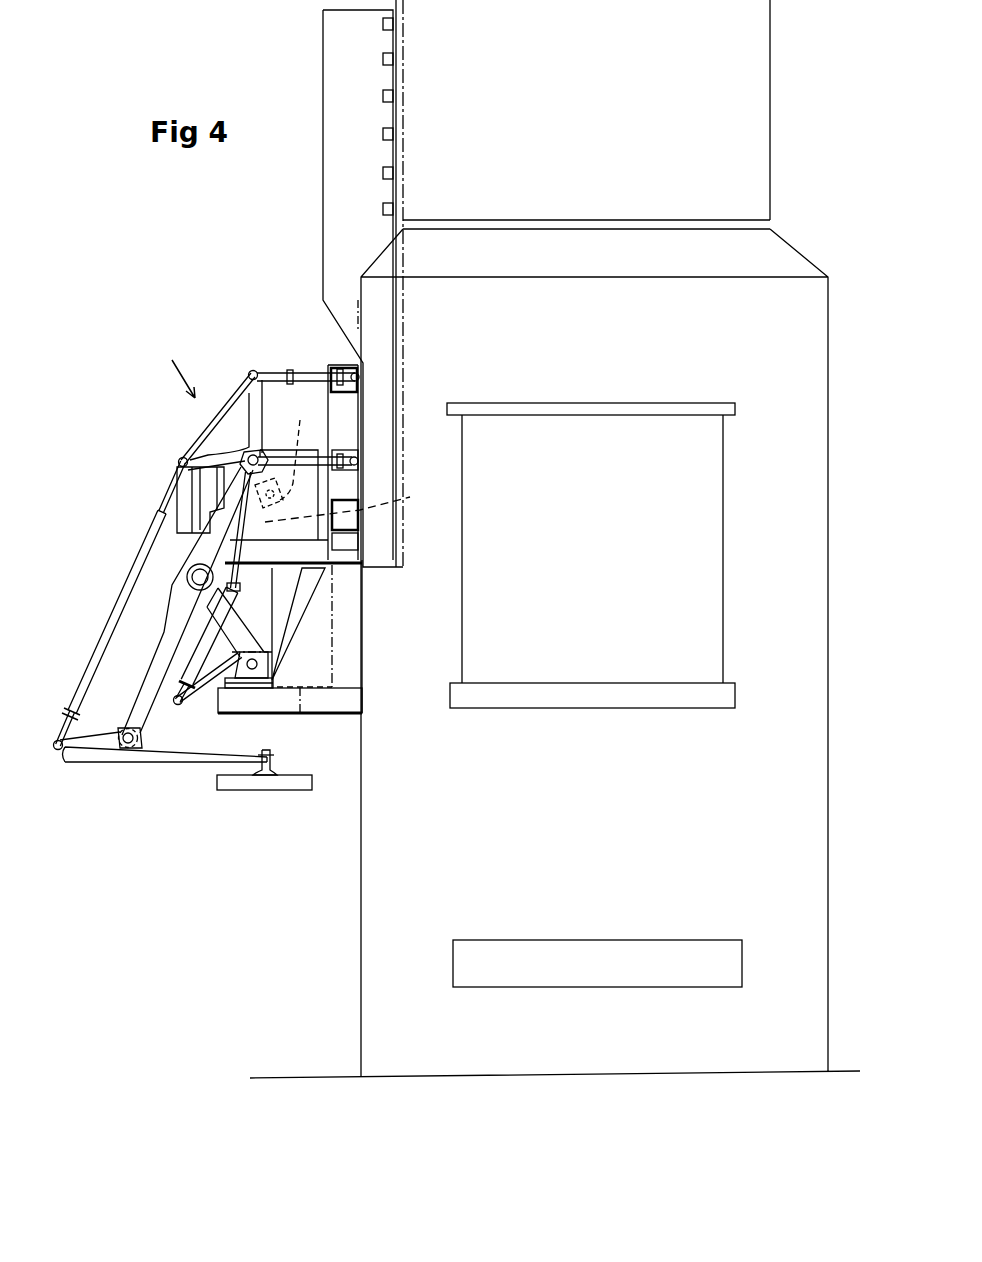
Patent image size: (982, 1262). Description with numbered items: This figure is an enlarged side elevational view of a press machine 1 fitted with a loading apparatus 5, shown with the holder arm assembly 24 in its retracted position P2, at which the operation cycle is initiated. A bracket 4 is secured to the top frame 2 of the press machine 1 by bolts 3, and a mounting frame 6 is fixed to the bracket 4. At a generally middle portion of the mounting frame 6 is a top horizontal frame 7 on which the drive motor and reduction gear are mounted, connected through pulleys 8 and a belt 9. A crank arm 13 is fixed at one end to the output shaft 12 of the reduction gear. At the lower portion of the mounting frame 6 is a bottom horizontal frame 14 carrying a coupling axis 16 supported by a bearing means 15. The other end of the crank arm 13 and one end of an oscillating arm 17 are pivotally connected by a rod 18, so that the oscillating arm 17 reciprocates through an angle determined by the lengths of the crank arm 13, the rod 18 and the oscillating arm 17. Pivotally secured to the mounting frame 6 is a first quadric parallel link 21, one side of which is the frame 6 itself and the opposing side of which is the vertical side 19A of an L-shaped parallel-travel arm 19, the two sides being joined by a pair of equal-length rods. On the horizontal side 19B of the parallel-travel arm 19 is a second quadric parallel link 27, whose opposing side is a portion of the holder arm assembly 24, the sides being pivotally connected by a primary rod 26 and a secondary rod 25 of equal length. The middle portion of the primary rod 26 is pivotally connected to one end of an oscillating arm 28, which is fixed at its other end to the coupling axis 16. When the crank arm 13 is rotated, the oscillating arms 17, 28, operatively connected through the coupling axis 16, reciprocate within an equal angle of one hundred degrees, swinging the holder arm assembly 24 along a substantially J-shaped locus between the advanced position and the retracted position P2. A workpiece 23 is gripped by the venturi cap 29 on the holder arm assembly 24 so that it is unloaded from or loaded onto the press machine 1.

The press machine 1 is at (787, 245).
The top frame 2 is at (407, 112).
The bolts 3 is at (387, 57).
The bracket 4 is at (337, 185).
The loading apparatus 5 is at (143, 358).
The mounting frame 6 is at (353, 694).
The top horizontal frame 7 is at (303, 568).
The pulleys 8 is at (177, 503).
The belt 9 is at (172, 528).
The output shaft 12 is at (276, 451).
The crank arm 13 is at (353, 502).
The bottom horizontal frame 14 is at (245, 712).
The bearing means 15 is at (268, 650).
The coupling axis 16 is at (268, 667).
The oscillating arm 17 is at (205, 703).
The rod 18 is at (240, 580).
The L-shaped parallel-travel arm 19 is at (248, 423).
The vertical side 19A is at (255, 370).
The horizontal side 19B is at (208, 456).
The first quadric parallel link 21 is at (322, 366).
The workpiece 23 is at (290, 792).
The holder arm assembly 24 is at (168, 768).
The secondary rod 25 is at (106, 625).
The primary rod 26 is at (166, 630).
The second quadric parallel link 27 is at (103, 605).
The oscillating arm 28 is at (237, 622).
The venturi cap 29 is at (277, 770).
The retracted position P2 is at (268, 808).